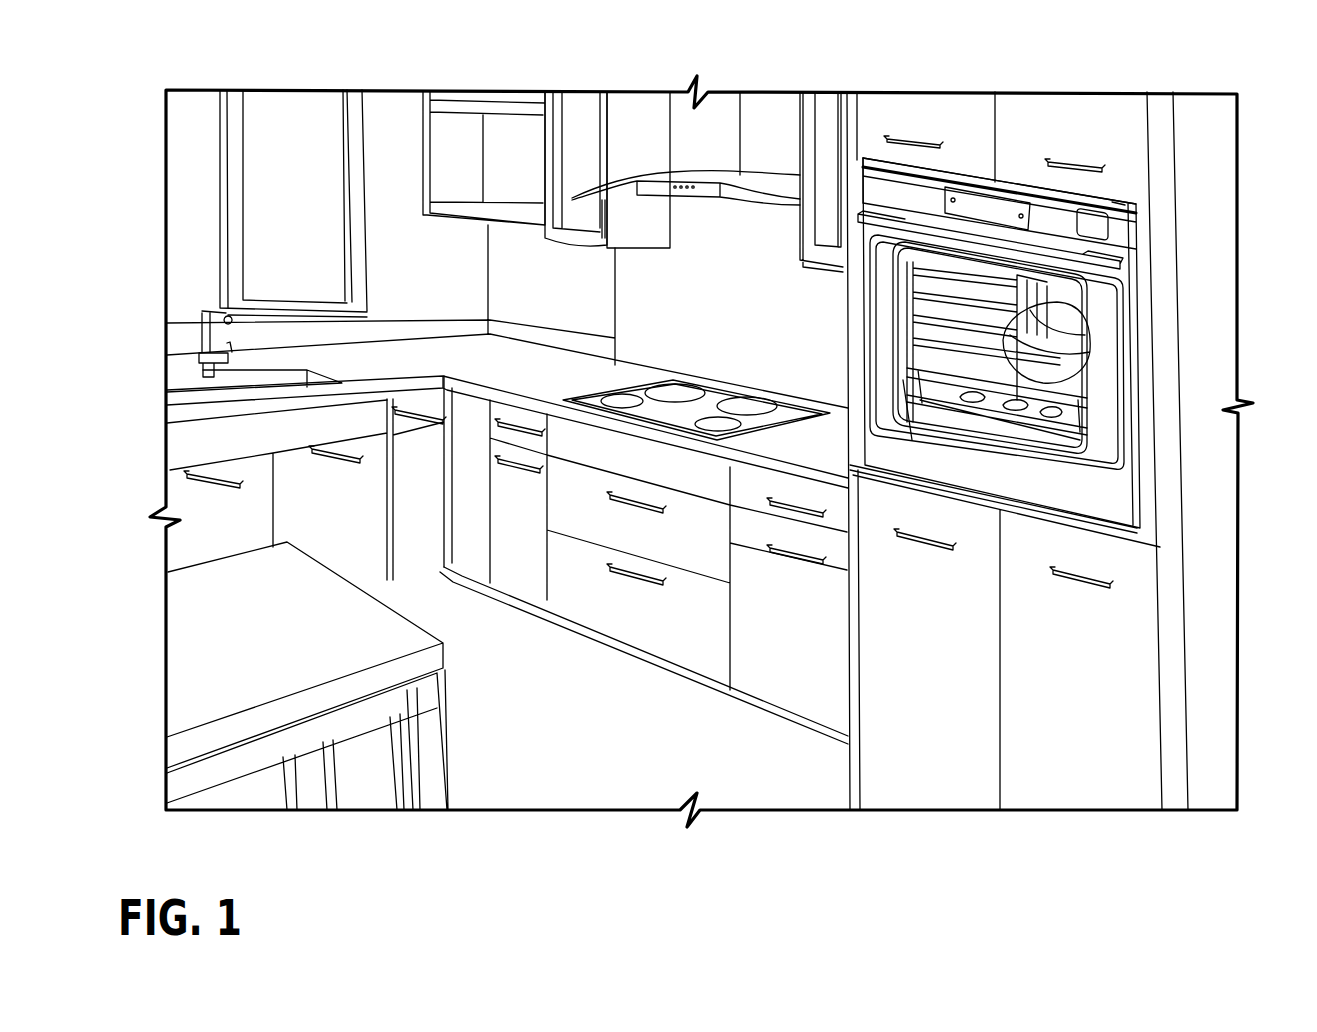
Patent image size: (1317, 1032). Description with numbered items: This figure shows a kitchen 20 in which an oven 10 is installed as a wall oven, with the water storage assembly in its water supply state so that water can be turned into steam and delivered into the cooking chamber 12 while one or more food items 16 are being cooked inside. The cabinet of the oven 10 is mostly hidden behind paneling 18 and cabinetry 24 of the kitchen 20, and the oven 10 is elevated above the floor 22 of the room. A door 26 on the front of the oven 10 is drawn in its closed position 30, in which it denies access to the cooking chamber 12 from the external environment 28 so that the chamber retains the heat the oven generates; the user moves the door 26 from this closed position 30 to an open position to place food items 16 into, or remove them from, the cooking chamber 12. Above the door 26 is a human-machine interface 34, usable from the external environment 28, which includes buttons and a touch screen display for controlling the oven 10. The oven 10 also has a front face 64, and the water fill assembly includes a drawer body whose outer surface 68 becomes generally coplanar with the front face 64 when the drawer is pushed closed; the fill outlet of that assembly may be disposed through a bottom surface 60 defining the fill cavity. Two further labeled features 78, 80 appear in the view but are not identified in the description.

The oven 10 is at (1082, 279).
The cooking chamber 12 is at (1065, 297).
The food items 16 is at (1067, 362).
The paneling 18 is at (1160, 222).
The kitchen 20 is at (193, 168).
The floor 22 is at (673, 766).
The cabinetry 24 is at (1057, 120).
The door 26 is at (885, 298).
The external environment 28 is at (316, 153).
The closed position 30 is at (864, 342).
The human-machine interface 34 is at (940, 195).
The bottom surface 60 is at (1068, 211).
The front face 64 is at (882, 193).
The outer surface 68 is at (1122, 202).
The button 78 is at (1097, 217).
The faucet 80 is at (224, 315).